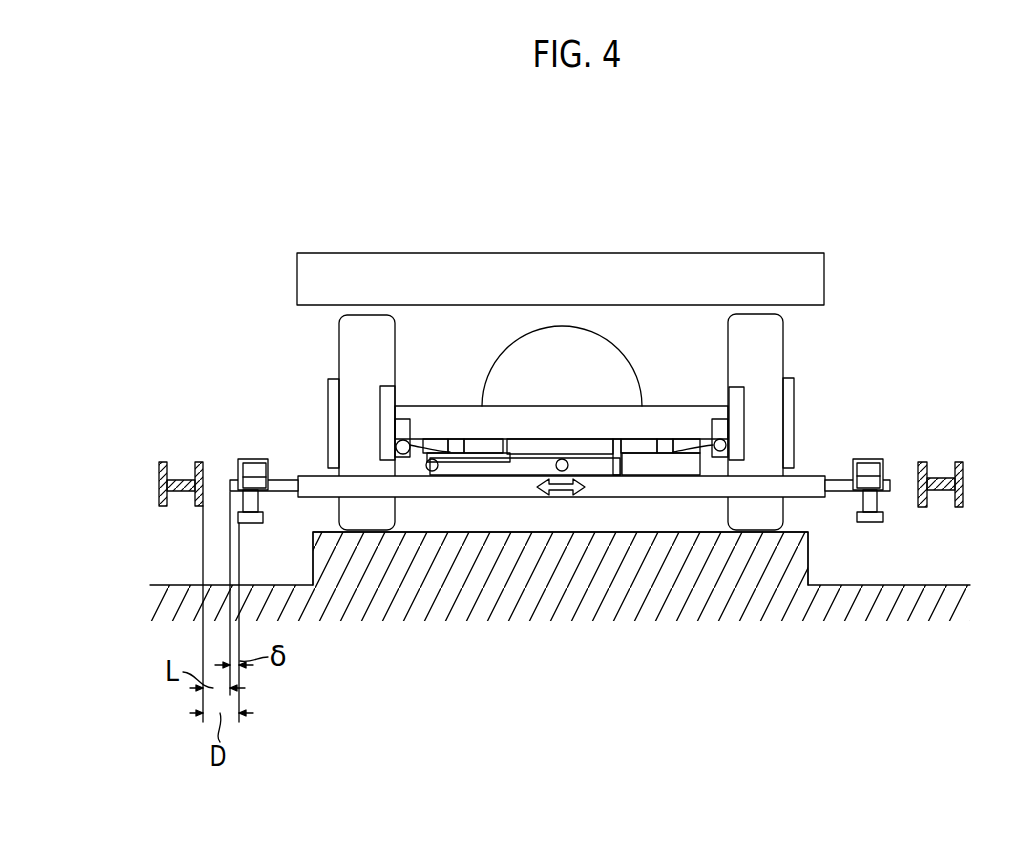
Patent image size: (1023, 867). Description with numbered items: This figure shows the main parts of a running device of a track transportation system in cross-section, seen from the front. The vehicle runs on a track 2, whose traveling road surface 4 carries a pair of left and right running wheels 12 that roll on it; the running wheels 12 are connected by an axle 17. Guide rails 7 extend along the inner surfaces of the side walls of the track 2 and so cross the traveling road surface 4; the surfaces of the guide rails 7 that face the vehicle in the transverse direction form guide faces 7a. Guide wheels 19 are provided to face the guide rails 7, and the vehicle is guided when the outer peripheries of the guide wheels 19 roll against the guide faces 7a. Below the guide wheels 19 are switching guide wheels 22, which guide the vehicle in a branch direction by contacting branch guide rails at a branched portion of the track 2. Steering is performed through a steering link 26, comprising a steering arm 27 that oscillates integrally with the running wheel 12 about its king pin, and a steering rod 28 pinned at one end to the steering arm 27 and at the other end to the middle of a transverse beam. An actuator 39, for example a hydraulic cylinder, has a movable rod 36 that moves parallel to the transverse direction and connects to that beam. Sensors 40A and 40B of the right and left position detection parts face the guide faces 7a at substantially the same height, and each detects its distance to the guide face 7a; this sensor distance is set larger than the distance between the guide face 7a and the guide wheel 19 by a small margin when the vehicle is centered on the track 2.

The track 2 is at (853, 603).
The traveling road surface 4 is at (513, 532).
The guide rail 7 is at (560, 455).
The guide face 7a is at (210, 468).
The running wheel 12 is at (355, 350).
The axle 17 is at (528, 418).
The guide wheel 19 is at (231, 478).
The switching guide wheel 22 is at (262, 514).
The steering link 26 is at (536, 579).
The steering arm 27 is at (400, 430).
The steering rod 28 is at (406, 452).
The movable rod 36 is at (602, 463).
The actuator 39 is at (661, 467).
The sensor 40A is at (255, 459).
The sensor 40B is at (866, 459).